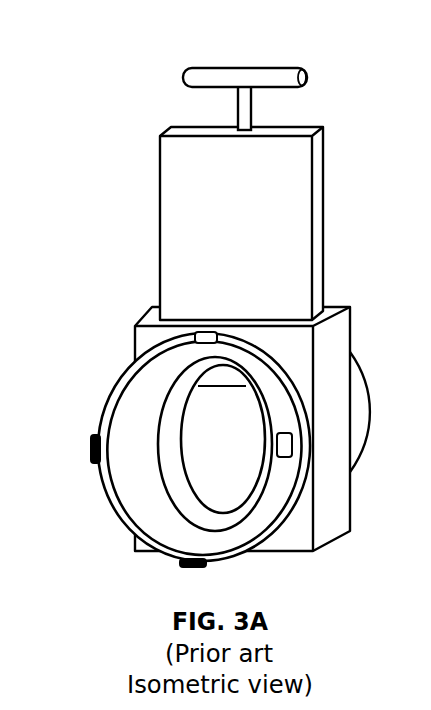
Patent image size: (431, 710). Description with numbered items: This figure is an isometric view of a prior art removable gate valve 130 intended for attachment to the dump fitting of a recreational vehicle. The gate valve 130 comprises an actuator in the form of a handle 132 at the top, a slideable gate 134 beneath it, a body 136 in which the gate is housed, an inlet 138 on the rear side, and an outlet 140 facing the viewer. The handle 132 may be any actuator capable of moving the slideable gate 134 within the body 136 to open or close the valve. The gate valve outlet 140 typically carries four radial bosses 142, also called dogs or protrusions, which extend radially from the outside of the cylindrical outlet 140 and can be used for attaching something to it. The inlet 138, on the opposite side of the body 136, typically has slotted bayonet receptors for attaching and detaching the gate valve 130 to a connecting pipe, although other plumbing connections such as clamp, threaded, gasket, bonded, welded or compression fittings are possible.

The removable gate valve 130 is at (101, 56).
The handle 132 is at (272, 75).
The slideable gate 134 is at (290, 200).
The body 136 is at (335, 342).
The inlet 138 is at (357, 410).
The outlet 140 is at (127, 380).
The radial bosses 142 is at (283, 458).